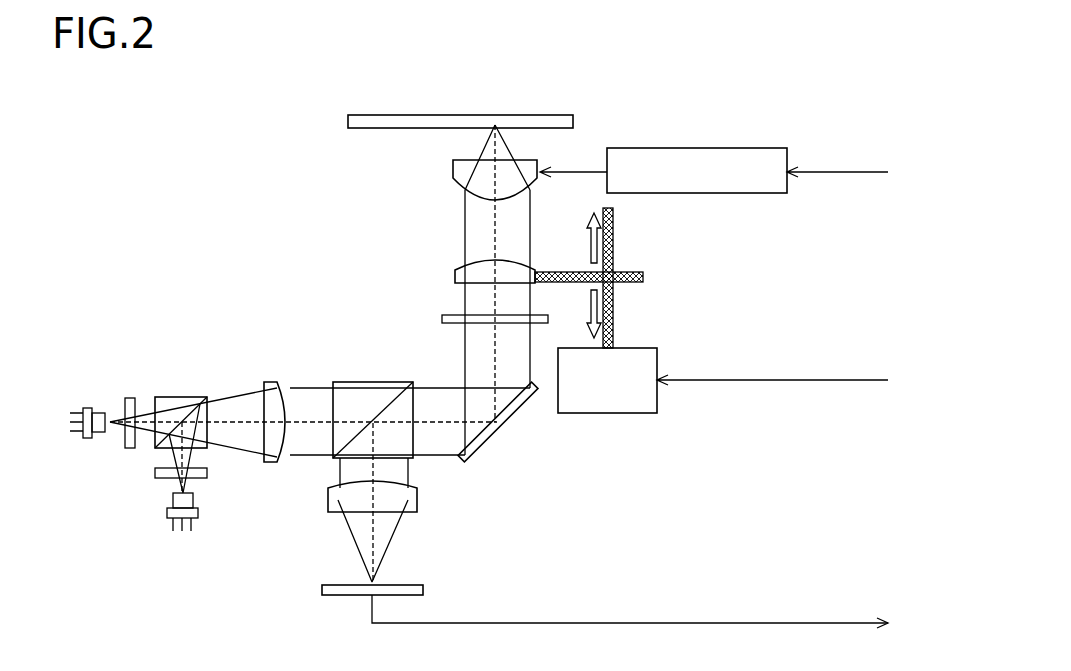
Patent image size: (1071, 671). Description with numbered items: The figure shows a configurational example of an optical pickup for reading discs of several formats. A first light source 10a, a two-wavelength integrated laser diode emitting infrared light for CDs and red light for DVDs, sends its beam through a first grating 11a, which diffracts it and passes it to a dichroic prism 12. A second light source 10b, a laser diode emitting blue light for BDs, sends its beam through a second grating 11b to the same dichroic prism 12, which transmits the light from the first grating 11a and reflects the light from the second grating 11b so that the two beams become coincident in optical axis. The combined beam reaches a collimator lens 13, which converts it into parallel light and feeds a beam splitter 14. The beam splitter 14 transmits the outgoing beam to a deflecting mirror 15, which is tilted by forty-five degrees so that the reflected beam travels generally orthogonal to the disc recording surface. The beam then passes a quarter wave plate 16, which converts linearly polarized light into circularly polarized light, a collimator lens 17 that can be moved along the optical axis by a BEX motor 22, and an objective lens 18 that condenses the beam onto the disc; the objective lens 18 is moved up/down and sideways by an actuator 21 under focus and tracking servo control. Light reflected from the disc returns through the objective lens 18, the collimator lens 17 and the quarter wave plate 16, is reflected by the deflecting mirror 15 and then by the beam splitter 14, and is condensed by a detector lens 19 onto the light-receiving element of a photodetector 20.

The first light source 10a is at (85, 408).
The second light source 10b is at (199, 513).
The first grating 11a is at (129, 398).
The second grating 11b is at (208, 474).
The dichroic prism 12 is at (183, 397).
The collimator lens 13 is at (270, 382).
The beam splitter 14 is at (373, 382).
The deflecting mirror 15 is at (505, 432).
The quarter wave plate 16 is at (548, 320).
The collimator lens 17 is at (537, 272).
The objective lens 18 is at (538, 163).
The detector lens 19 is at (418, 490).
The photodetector 20 is at (424, 588).
The actuator 21 is at (693, 148).
The BEX motor 22 is at (637, 348).